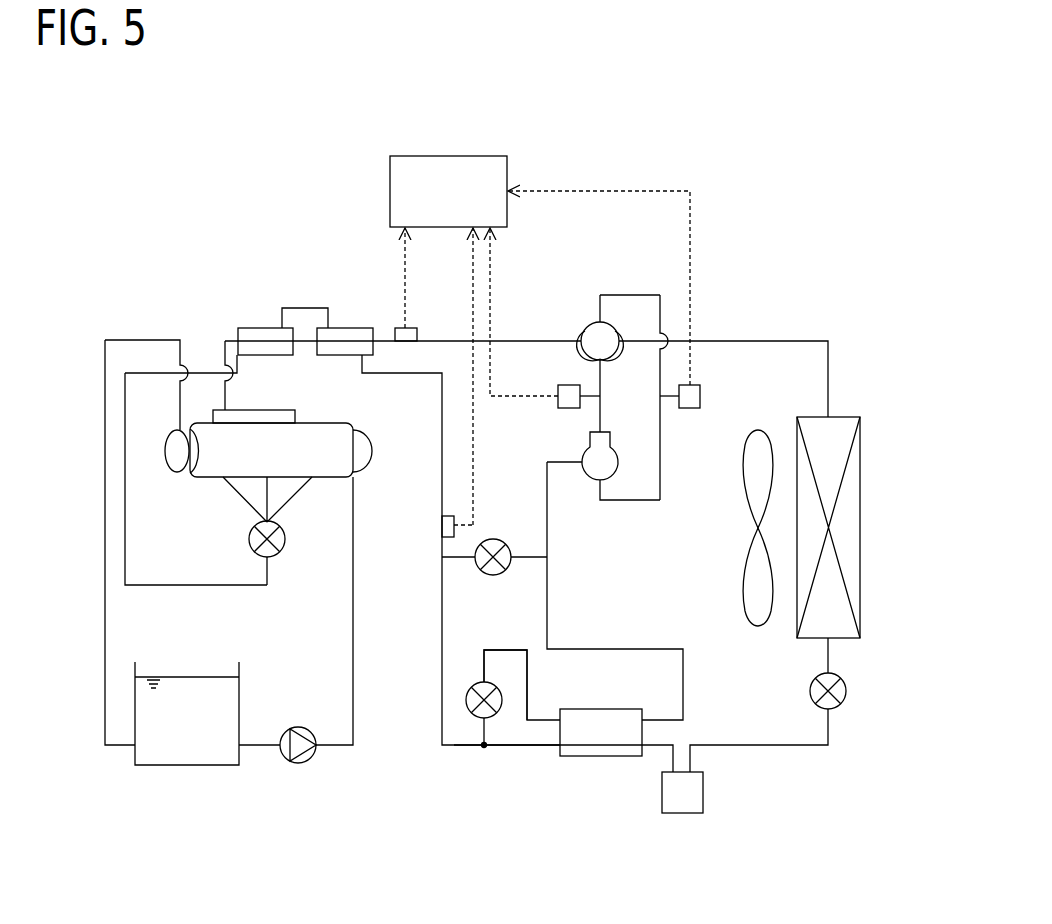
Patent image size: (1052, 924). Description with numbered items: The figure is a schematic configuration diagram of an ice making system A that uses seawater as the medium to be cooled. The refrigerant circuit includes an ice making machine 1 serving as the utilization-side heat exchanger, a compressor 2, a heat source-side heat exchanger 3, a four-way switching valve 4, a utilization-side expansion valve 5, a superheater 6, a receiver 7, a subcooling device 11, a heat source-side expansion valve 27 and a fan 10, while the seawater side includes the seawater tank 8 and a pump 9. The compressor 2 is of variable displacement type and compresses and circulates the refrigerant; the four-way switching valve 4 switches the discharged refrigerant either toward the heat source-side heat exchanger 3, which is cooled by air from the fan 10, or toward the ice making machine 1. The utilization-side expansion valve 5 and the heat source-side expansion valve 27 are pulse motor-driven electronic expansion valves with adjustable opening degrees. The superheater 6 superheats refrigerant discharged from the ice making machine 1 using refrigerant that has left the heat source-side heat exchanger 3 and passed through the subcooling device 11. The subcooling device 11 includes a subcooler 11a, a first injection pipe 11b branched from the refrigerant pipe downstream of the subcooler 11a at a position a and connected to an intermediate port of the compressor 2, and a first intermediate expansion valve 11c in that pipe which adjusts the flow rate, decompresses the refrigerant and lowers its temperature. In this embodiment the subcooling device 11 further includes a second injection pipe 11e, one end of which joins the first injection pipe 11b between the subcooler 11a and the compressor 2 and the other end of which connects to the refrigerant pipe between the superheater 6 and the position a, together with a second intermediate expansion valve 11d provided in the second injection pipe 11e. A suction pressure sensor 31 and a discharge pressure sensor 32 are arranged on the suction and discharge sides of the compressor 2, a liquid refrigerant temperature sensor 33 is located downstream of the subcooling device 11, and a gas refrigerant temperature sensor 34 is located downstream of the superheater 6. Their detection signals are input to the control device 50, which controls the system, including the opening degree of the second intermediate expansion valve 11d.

The ice making machine 1 is at (335, 480).
The compressor 2 is at (585, 479).
The heat source-side heat exchanger 3 is at (866, 527).
The four-way switching valve 4 is at (584, 325).
The utilization-side expansion valve 5 is at (278, 556).
The superheater 6 is at (254, 326).
The receiver 7 is at (683, 816).
The seawater tank 8 is at (195, 768).
The pump 9 is at (303, 766).
The fan 10 is at (771, 428).
The subcooling device 11 is at (526, 762).
The subcooler 11a is at (583, 758).
The first injection pipe 11b is at (503, 650).
The first intermediate expansion valve 11c is at (466, 700).
The second intermediate expansion valve 11d is at (505, 538).
The second injection pipe 11e is at (458, 558).
The heat source-side expansion valve 27 is at (848, 690).
The suction pressure sensor 31 is at (702, 396).
The discharge pressure sensor 32 is at (565, 409).
The liquid refrigerant temperature sensor 33 is at (441, 527).
The gas refrigerant temperature sensor 34 is at (393, 333).
The control device 50 is at (471, 156).
The ice making system A is at (895, 368).
The position a is at (483, 750).